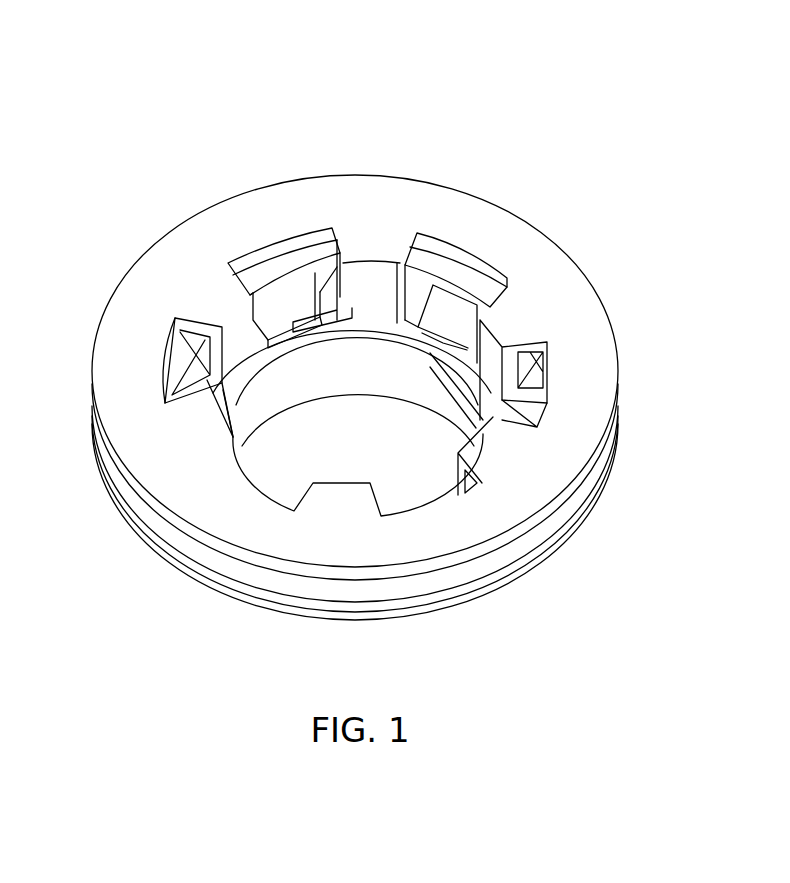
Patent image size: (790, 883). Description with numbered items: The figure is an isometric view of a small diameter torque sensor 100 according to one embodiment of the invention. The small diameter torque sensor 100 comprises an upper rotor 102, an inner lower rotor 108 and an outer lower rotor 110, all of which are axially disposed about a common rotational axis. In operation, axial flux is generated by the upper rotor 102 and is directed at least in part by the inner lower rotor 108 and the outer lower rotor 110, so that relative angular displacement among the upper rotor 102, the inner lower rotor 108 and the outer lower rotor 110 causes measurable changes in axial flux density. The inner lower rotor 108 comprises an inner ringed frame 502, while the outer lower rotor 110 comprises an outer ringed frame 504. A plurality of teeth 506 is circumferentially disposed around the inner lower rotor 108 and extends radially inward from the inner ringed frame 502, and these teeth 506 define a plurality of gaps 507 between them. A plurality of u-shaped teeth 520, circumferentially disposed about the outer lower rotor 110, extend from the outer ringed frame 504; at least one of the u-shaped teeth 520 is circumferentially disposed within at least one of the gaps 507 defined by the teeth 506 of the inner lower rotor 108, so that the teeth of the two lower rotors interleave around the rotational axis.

The small diameter torque sensor 100 is at (411, 78).
The upper rotor 102 is at (364, 368).
The inner lower rotor 108 is at (138, 527).
The outer lower rotor 110 is at (250, 204).
The inner ringed frame 502 is at (241, 567).
The outer ringed frame 504 is at (458, 202).
The plurality of teeth 506 is at (284, 305).
The plurality of gaps 507 is at (330, 330).
The plurality of u-shaped teeth 520 is at (507, 322).